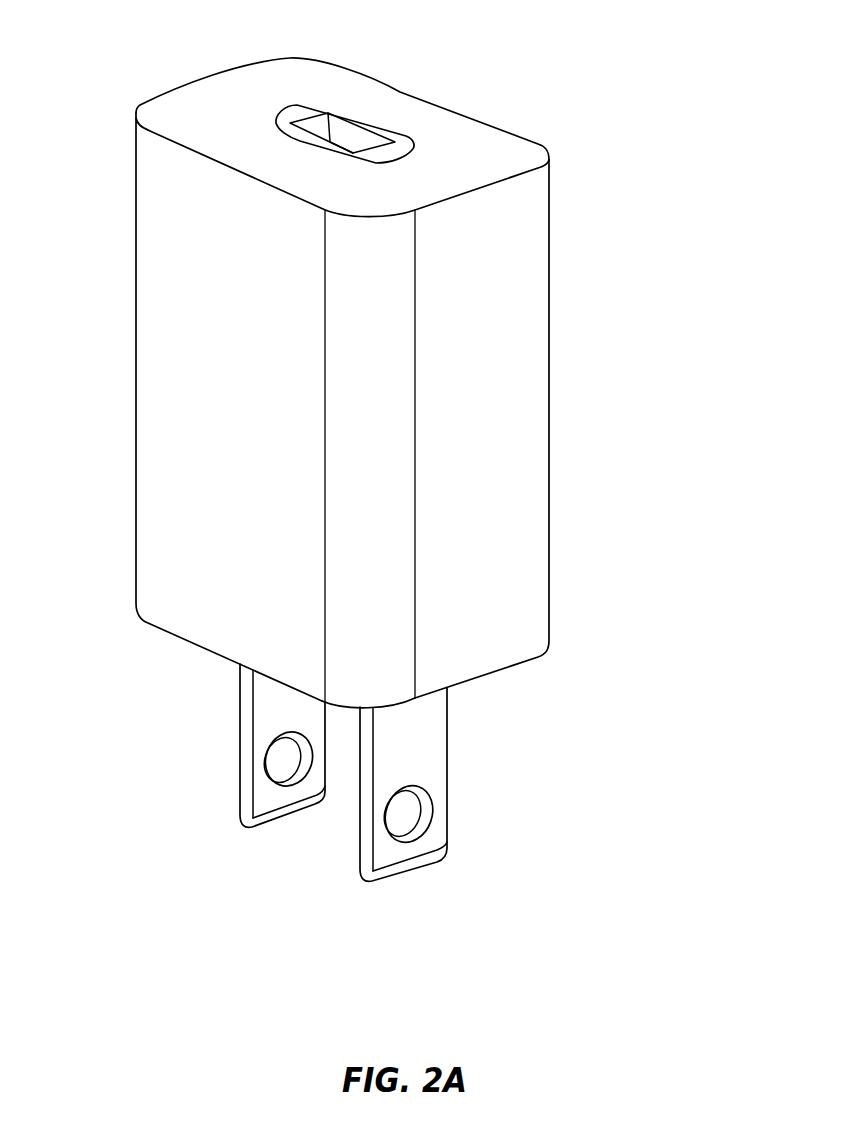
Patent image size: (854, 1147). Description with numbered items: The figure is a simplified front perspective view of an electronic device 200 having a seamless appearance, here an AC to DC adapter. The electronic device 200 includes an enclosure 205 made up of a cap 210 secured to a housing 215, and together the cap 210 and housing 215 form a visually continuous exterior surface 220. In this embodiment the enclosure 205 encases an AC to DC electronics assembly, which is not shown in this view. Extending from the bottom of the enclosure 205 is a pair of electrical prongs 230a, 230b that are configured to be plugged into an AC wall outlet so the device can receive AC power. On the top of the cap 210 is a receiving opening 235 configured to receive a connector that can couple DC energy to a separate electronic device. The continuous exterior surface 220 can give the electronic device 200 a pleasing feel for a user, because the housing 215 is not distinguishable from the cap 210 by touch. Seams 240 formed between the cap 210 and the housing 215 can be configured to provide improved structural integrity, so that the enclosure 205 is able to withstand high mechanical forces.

The electronic device 200 is at (553, 108).
The enclosure 205 is at (505, 388).
The cap 210 is at (237, 91).
The housing 215 is at (512, 483).
The visually continuous exterior surface 220 is at (160, 340).
The electrical prong 230a is at (238, 803).
The electrical prong 230b is at (363, 853).
The receiving opening 235 is at (347, 137).
The seams 240 is at (263, 185).